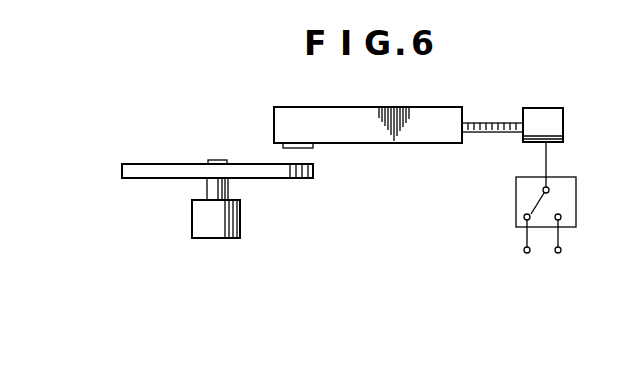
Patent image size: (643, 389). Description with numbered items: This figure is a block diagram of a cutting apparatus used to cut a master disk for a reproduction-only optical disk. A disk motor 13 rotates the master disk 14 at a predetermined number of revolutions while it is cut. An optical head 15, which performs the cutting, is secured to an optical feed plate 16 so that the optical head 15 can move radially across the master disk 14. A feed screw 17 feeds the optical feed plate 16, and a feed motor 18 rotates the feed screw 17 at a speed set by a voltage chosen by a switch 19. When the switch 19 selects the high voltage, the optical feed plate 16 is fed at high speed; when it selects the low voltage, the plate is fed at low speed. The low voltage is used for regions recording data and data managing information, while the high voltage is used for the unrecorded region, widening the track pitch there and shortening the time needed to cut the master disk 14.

The disk motor 13 is at (238, 215).
The master disk 14 is at (308, 178).
The optical head 15 is at (310, 148).
The optical feed plate 16 is at (395, 143).
The feed screw 17 is at (481, 132).
The feed motor 18 is at (553, 122).
The switch 19 is at (576, 197).